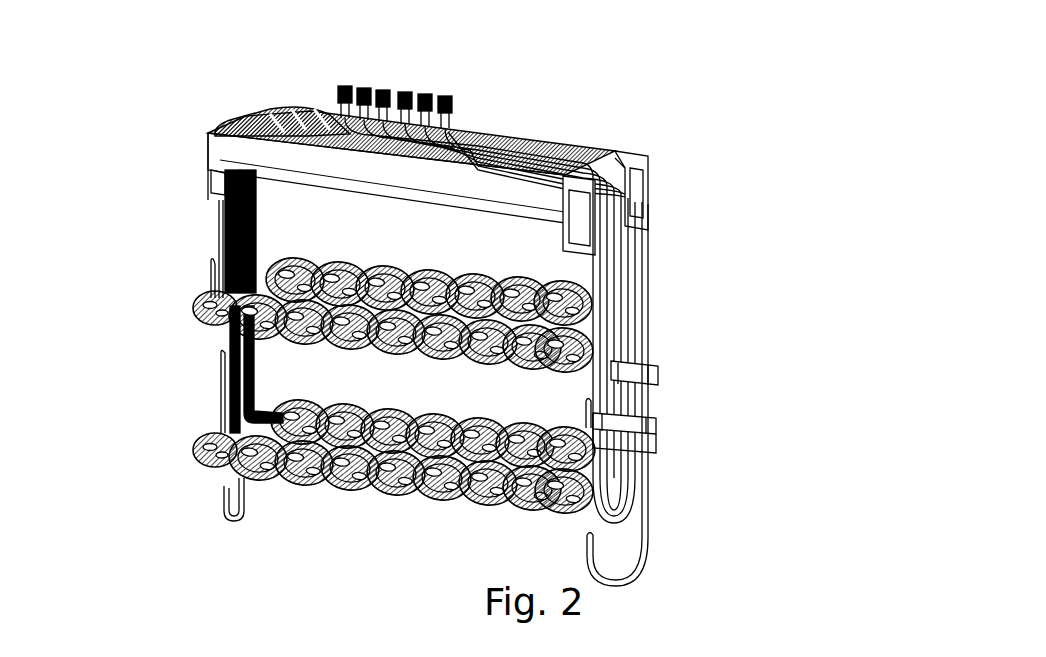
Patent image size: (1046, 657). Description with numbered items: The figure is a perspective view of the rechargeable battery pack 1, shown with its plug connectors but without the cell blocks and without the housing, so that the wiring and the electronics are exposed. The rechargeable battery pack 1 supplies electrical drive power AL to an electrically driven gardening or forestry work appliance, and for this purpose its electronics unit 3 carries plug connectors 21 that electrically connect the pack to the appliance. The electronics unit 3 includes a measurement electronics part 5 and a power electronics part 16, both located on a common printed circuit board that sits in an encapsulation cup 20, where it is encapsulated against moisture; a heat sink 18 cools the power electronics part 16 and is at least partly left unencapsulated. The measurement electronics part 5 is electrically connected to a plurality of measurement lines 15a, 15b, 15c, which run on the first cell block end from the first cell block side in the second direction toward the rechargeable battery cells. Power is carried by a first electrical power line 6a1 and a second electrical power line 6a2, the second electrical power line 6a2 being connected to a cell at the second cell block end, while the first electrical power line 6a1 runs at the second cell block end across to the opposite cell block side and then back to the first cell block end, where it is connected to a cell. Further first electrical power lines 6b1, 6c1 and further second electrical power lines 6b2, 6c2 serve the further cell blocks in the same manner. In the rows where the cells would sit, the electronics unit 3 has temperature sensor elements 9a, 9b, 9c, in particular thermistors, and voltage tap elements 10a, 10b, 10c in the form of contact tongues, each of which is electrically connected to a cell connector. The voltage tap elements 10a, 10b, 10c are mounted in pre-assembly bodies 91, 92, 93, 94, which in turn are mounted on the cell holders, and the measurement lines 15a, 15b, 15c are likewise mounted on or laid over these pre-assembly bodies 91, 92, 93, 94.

The rechargeable battery pack 1 is at (128, 90).
The electronics unit 3 is at (327, 127).
The measurement electronics part 5 is at (300, 123).
The plug connectors 21 is at (328, 84).
The electrical drive power AL is at (432, 82).
The power electronics part 16 is at (477, 138).
The heat sink 18 is at (535, 132).
The encapsulation cup 20 is at (533, 190).
The measurement line 15a is at (207, 167).
The measurement line 15b is at (210, 193).
The measurement line 15c is at (210, 223).
The pre-assembly body 93 is at (208, 243).
The first electrical power line 6a1 is at (207, 258).
The pre-assembly body 91 is at (203, 310).
The further first electrical power line 6b1 is at (217, 370).
The pre-assembly body 92 is at (203, 450).
The further first electrical power line 6c1 is at (217, 493).
The voltage tap element 10a is at (328, 256).
The temperature sensor element 9a is at (540, 280).
The voltage tap element 10b is at (322, 336).
The temperature sensor element 9b is at (485, 352).
The voltage tap element 10c is at (330, 465).
The temperature sensor element 9c is at (473, 485).
The second electrical power line 6a2 is at (577, 270).
The pre-assembly body 94 is at (510, 425).
The further second electrical power line 6b2 is at (587, 413).
The further second electrical power line 6c2 is at (592, 543).